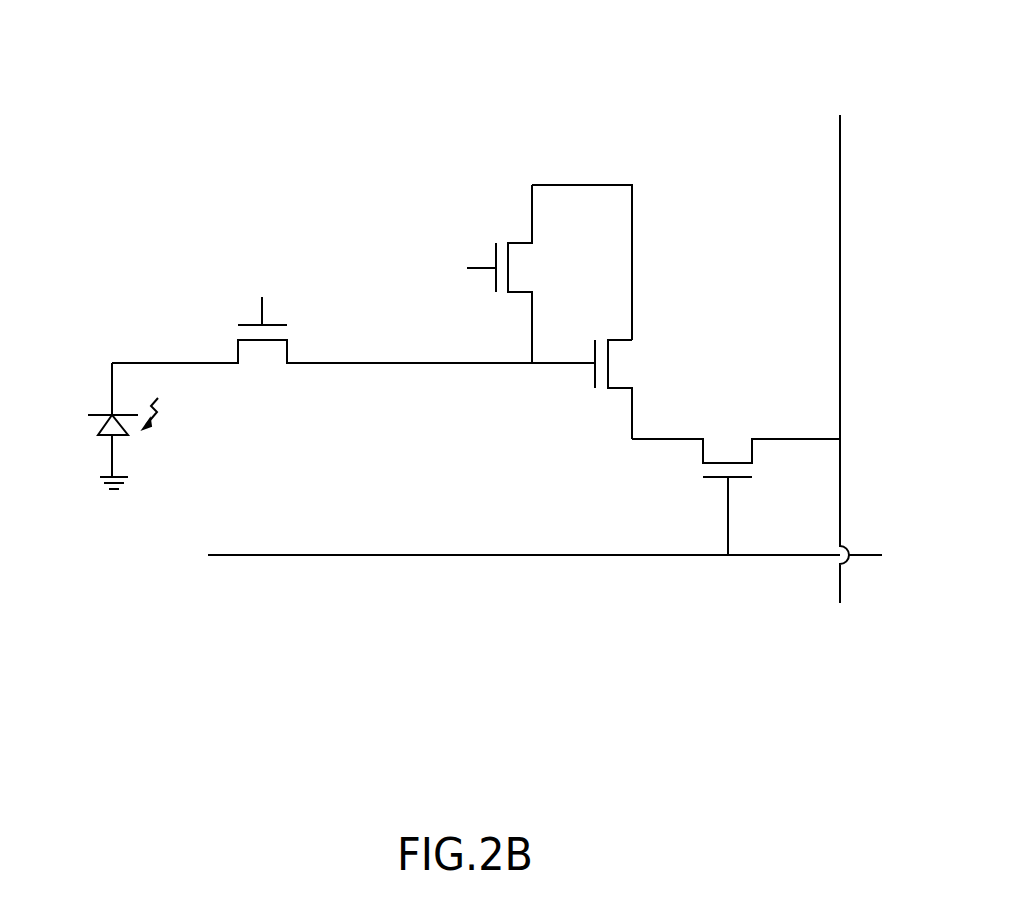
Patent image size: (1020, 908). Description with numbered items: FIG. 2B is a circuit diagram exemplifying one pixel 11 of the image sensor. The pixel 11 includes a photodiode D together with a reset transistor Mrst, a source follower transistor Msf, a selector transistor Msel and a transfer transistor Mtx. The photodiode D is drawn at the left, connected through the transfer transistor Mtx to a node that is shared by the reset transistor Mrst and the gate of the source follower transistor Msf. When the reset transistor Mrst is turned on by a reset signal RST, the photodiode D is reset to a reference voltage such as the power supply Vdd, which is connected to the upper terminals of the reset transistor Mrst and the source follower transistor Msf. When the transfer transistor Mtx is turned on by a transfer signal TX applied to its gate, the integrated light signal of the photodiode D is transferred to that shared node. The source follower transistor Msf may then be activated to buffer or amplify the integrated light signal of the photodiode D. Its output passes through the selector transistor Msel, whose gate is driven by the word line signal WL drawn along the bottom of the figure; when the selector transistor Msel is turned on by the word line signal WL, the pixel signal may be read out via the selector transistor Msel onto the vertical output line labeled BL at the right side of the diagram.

The pixel 11 is at (110, 53).
The photodiode D is at (108, 426).
The transfer transistor Mtx is at (353, 367).
The transfer signal TX is at (263, 294).
The reset transistor Mrst is at (546, 274).
The reset signal RST is at (449, 267).
The power supply Vdd is at (582, 242).
The source follower transistor Msf is at (644, 389).
The selector transistor Msel is at (736, 479).
The word line signal WL is at (516, 556).
The bit line BL is at (842, 377).